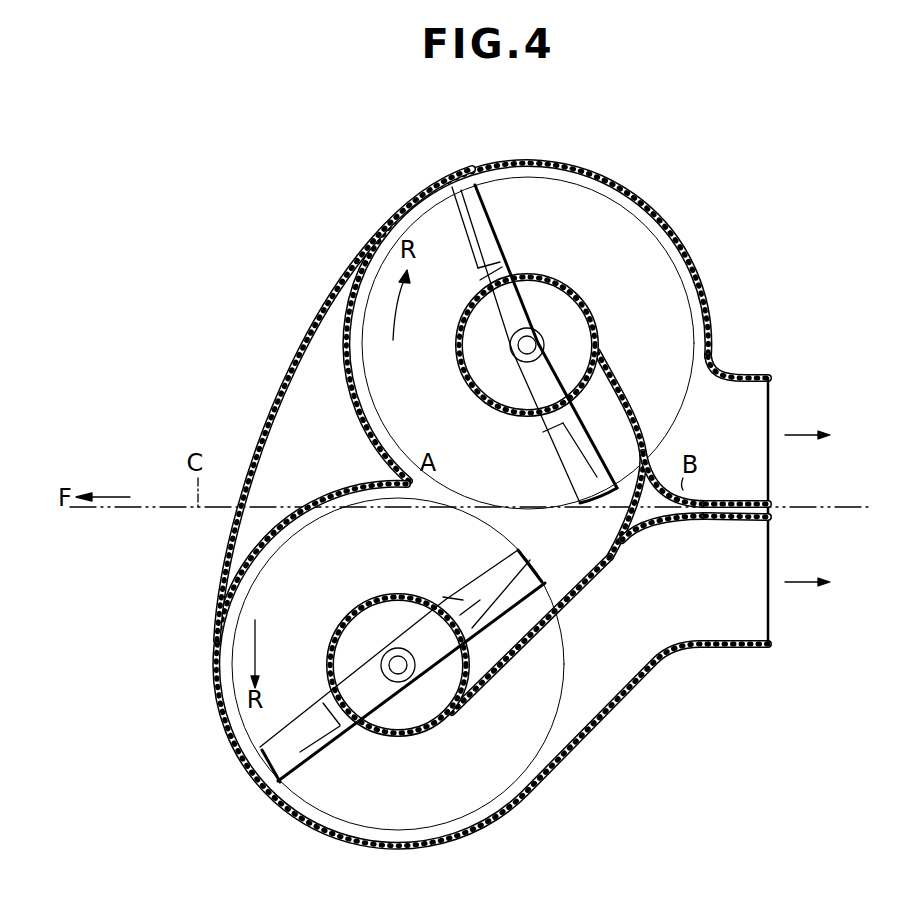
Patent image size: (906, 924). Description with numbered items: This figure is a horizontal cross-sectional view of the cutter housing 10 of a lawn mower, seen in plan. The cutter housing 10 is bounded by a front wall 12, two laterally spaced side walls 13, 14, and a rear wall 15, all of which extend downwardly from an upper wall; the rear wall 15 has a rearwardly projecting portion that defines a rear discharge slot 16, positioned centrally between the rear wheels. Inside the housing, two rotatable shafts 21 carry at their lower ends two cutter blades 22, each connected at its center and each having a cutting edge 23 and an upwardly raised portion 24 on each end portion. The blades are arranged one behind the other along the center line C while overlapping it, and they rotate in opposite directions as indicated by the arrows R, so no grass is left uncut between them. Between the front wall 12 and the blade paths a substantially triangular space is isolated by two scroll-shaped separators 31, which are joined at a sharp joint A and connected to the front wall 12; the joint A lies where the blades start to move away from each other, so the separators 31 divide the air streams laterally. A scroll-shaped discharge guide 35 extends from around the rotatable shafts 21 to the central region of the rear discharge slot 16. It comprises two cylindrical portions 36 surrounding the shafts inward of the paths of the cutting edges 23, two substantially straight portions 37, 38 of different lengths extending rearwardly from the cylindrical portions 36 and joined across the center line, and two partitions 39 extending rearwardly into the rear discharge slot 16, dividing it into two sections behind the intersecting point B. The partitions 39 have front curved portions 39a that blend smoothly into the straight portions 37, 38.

The cutter housing 10 is at (298, 311).
The front wall 12 is at (228, 540).
The side wall 13 is at (416, 848).
The side wall 14 is at (550, 165).
The rear wall 15 is at (712, 330).
The rear discharge slot 16 is at (770, 497).
The rotatable shaft 21 is at (530, 340).
The cutter blade 22 is at (544, 432).
The cutting edge 23 is at (485, 228).
The upwardly raised portion 24 is at (453, 232).
The scroll-shaped separator 31 is at (356, 392).
The scroll-shaped discharge guide 35 is at (650, 567).
The cylindrical portion 36 is at (462, 385).
The straight portion 37 is at (624, 382).
The straight portion 38 is at (508, 652).
The partition 39 is at (735, 500).
The front curved portion 39a is at (672, 483).